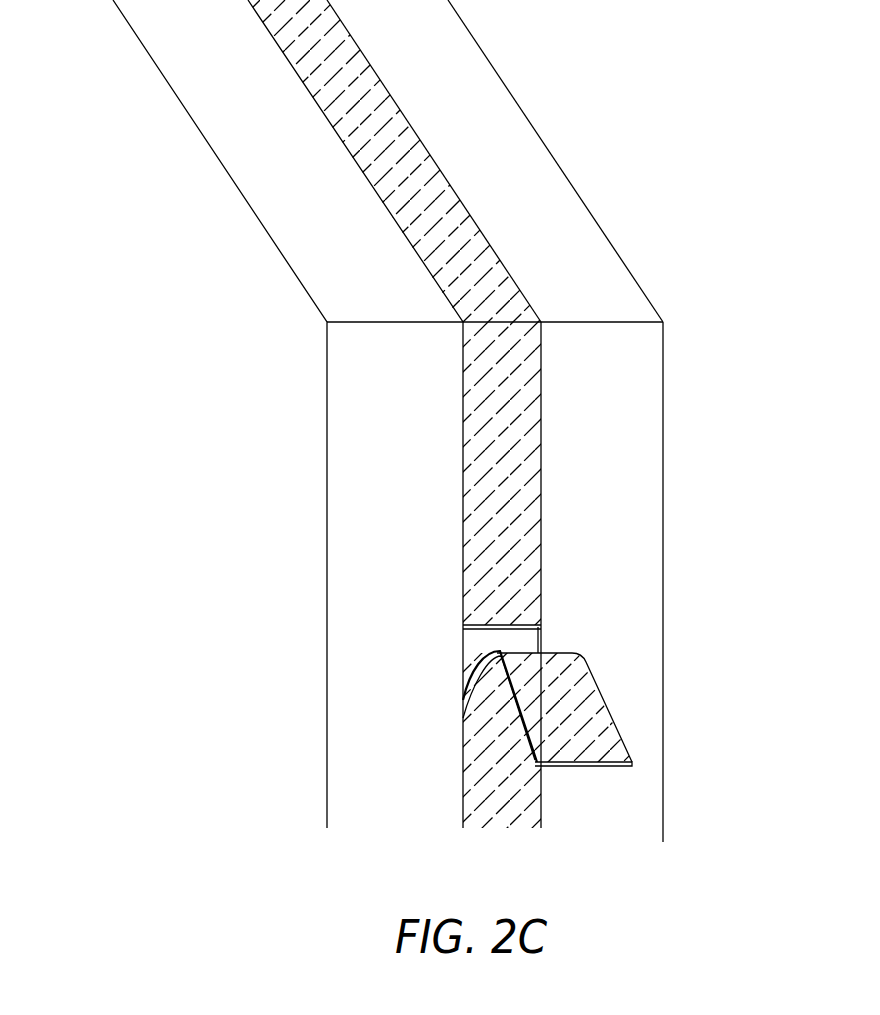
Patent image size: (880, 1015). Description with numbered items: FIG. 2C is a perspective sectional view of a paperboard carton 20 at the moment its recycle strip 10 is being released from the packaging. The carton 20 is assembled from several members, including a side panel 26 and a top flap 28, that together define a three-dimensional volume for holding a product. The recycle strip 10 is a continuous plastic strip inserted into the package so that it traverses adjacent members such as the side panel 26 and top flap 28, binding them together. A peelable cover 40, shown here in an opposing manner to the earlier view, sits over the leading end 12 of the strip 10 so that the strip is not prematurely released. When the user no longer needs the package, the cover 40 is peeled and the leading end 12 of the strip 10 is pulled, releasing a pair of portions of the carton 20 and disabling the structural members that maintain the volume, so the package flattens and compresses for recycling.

The carton 20 is at (712, 256).
The top flap 28 is at (562, 222).
The side panel 26 is at (632, 567).
The recycle strip 10 is at (542, 497).
The peelable cover 40 is at (625, 738).
The leading end 12 is at (598, 770).